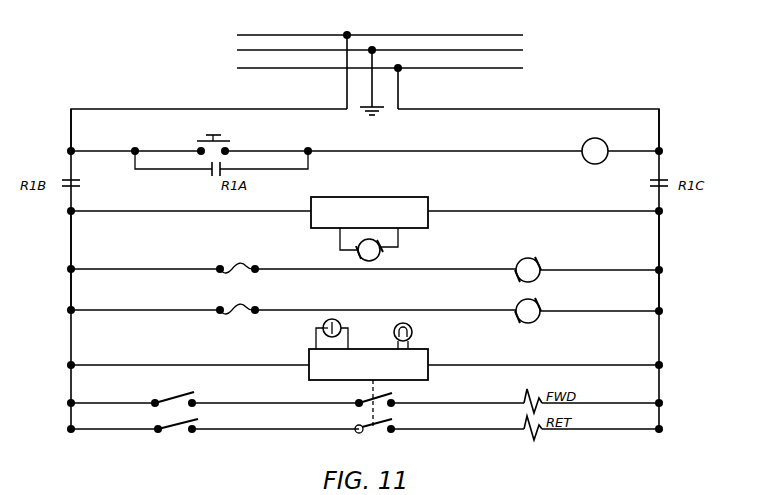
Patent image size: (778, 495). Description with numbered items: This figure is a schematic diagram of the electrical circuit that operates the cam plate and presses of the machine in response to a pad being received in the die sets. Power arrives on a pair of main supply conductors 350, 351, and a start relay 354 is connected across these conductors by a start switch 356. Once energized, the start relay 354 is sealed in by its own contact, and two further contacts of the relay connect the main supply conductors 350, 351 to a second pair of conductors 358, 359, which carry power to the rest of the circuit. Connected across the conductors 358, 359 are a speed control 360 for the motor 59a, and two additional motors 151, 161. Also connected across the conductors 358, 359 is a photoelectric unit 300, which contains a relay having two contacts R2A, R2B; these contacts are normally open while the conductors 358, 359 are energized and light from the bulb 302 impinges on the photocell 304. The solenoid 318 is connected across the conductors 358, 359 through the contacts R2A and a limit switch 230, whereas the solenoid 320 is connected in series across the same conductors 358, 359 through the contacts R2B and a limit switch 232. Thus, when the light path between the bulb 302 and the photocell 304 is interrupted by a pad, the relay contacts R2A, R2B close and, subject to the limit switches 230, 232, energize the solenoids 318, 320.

The main supply conductor 350 is at (71, 125).
The main supply conductor 351 is at (662, 133).
The start relay 354 is at (588, 140).
The start switch 356 is at (222, 140).
The conductor 358 is at (70, 268).
The conductor 359 is at (660, 291).
The speed control 360 is at (430, 197).
The motor 59a is at (378, 256).
The motor 151 is at (523, 258).
The motor 161 is at (523, 299).
The photoelectric unit 300 is at (430, 354).
The bulb 302 is at (412, 330).
The photocell 304 is at (338, 322).
The limit switch 230 is at (188, 392).
The limit switch 232 is at (168, 432).
The solenoid 318 is at (536, 392).
The solenoid 320 is at (526, 438).
The relay R2 contact R2A is at (390, 397).
The relay R2 contact R2B is at (390, 423).